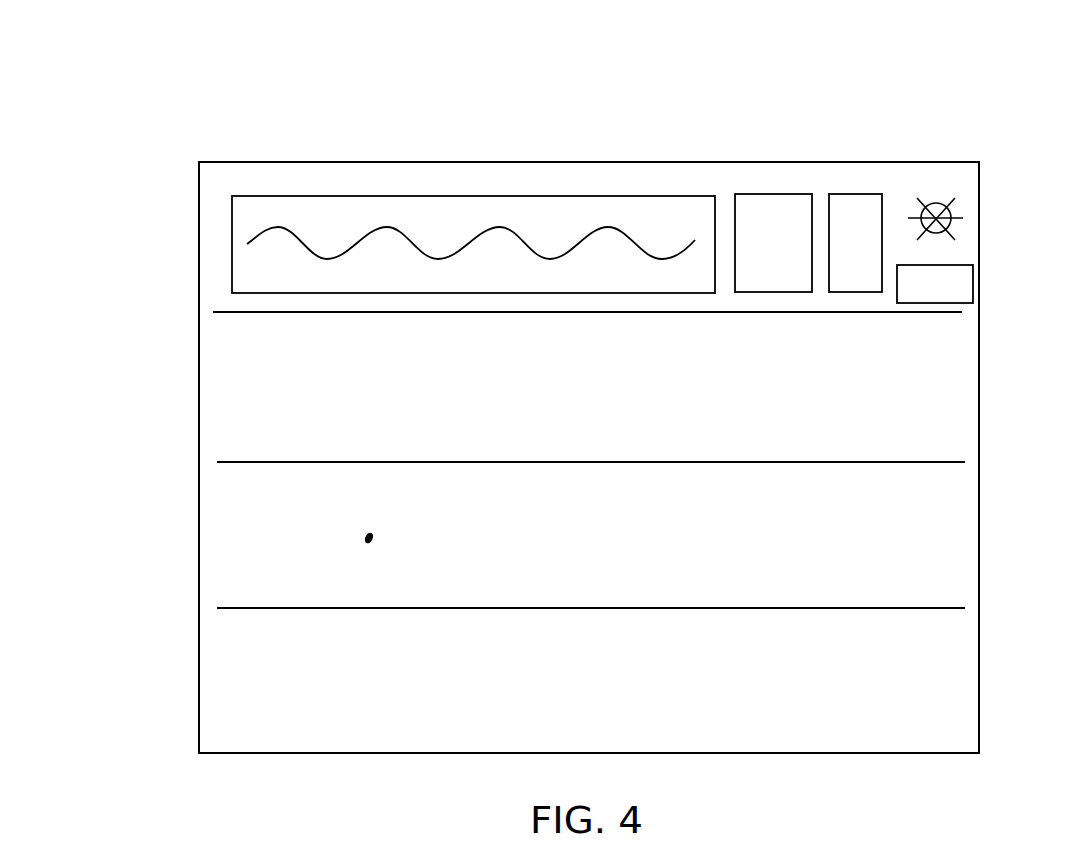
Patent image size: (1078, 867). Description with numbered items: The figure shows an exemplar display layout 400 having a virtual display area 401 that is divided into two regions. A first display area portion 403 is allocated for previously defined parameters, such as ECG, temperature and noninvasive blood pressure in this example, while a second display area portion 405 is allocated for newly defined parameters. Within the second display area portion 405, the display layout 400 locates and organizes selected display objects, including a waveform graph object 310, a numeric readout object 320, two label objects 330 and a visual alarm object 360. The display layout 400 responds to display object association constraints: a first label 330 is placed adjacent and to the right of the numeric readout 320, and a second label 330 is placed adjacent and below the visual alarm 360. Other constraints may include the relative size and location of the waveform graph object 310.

The display layout 400 is at (587, 75).
The virtual display area 401 is at (215, 162).
The first display area portion 403 is at (1009, 429).
The second display area portion 405 is at (153, 255).
The waveform graph object 310 is at (263, 196).
The numeric readout object 320 is at (752, 194).
The label object 330 is at (847, 194).
The visual alarm object 360 is at (952, 213).